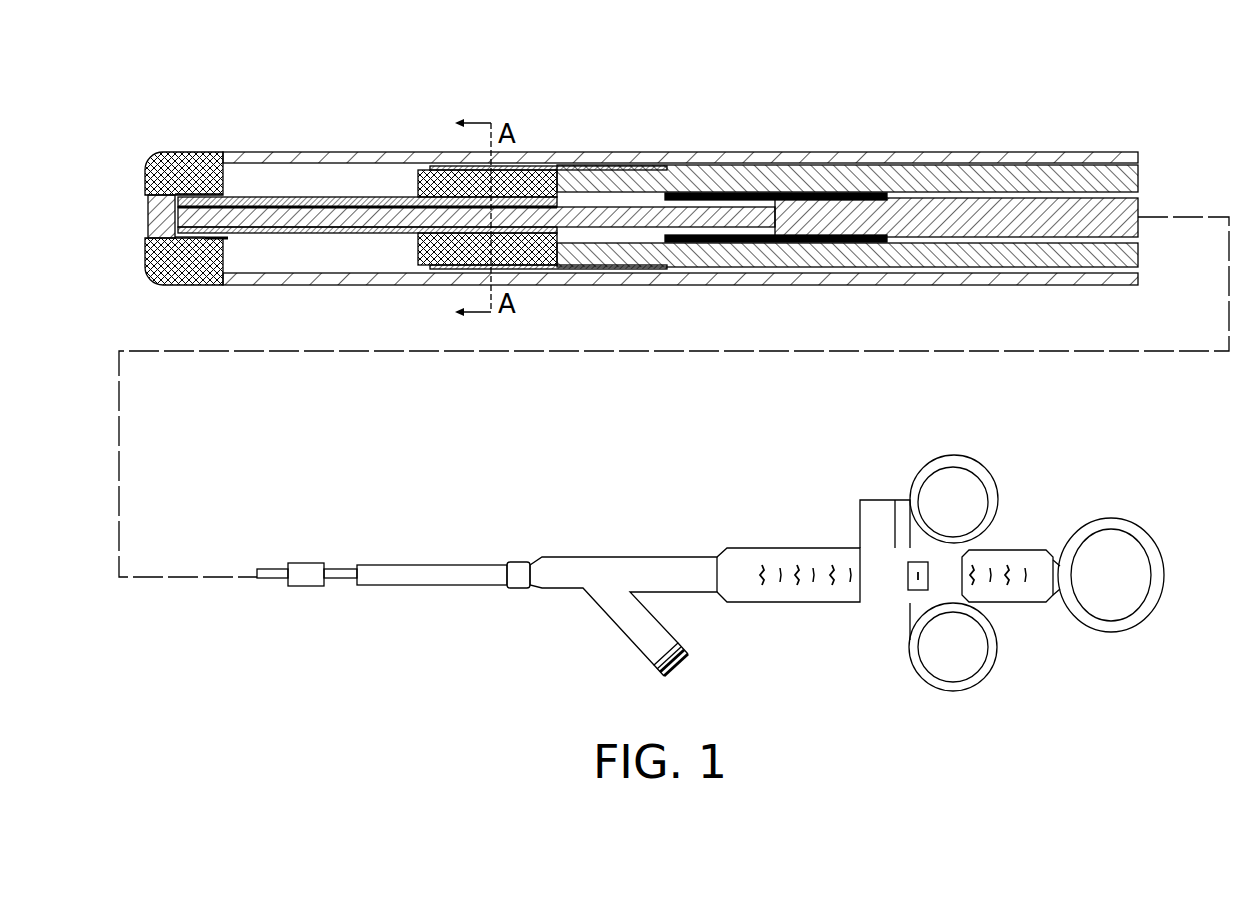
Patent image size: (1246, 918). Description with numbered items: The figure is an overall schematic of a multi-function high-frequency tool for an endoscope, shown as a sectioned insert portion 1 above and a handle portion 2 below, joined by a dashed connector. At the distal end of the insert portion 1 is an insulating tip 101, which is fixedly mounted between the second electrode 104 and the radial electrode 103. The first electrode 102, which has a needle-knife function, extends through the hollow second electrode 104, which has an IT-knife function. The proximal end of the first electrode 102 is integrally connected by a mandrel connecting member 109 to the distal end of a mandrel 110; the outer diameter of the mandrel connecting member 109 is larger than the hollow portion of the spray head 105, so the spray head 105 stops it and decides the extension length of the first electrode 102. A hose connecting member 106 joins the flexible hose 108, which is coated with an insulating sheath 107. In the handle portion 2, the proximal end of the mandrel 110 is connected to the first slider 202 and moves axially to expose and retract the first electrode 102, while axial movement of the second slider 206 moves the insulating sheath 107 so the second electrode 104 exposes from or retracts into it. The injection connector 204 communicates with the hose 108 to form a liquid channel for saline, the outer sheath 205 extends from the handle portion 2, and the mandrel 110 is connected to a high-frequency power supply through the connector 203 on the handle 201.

The insert portion 1 is at (428, 100).
The insulating tip 101 is at (202, 152).
The first electrode 102 is at (148, 215).
The radial electrode 103 is at (227, 193).
The second electrode 104 is at (348, 197).
The spray head 105 is at (418, 180).
The hose connecting member 106 is at (557, 167).
The insulating sheath 107 is at (690, 152).
The hose 108 is at (785, 160).
The mandrel connecting member 109 is at (858, 192).
The mandrel 110 is at (983, 197).
The handle portion 2 is at (555, 480).
The handle 201 is at (1107, 520).
The first slider 202 is at (985, 468).
The connector 203 is at (882, 500).
The injection connector 204 is at (648, 557).
The outer sheath 205 is at (410, 565).
The second slider 206 is at (298, 562).